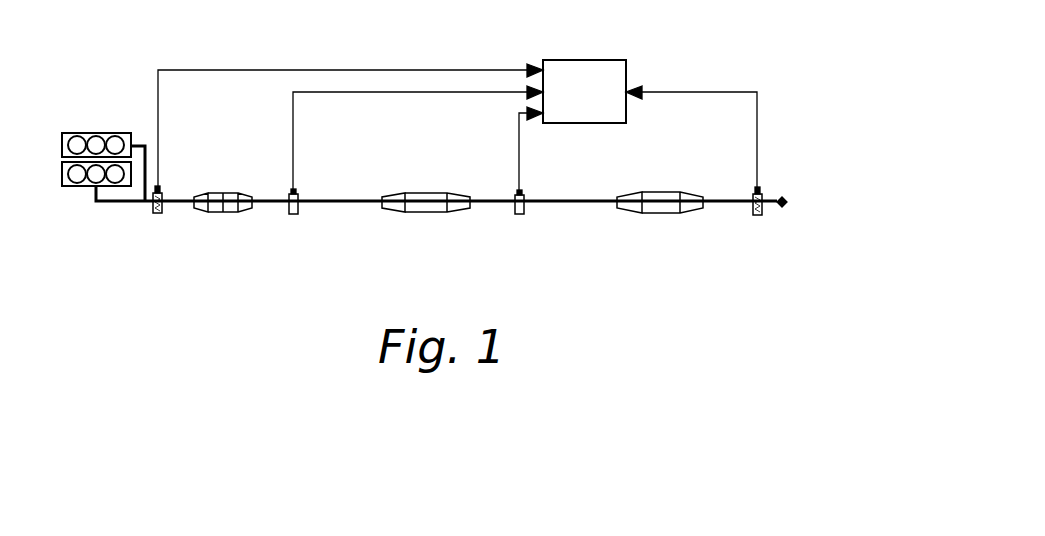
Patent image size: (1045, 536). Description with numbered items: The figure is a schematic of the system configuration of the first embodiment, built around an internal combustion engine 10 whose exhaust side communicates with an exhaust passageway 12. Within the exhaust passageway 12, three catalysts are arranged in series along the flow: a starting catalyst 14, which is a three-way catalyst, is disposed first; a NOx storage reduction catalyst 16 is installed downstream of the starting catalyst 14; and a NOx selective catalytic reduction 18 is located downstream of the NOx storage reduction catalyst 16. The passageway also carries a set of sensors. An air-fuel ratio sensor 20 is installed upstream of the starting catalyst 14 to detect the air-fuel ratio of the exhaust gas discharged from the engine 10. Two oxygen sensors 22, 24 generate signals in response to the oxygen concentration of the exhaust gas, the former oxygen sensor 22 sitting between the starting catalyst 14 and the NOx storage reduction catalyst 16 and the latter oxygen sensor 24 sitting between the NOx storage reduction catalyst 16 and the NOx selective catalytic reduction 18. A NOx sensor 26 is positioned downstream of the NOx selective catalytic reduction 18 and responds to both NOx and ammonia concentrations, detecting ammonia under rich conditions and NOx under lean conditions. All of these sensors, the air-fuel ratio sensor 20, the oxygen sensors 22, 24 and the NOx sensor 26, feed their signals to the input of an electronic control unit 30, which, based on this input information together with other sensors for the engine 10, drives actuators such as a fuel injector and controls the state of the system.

The internal combustion engine 10 is at (104, 126).
The exhaust passageway 12 is at (110, 207).
The starting catalyst 14 is at (228, 195).
The NOx storage reduction catalyst 16 is at (427, 197).
The NOx selective catalytic reduction 18 is at (655, 197).
The air-fuel ratio sensor 20 is at (163, 197).
The oxygen sensor 22 is at (300, 209).
The oxygen sensor 24 is at (527, 209).
The NOx sensor 26 is at (752, 213).
The electronic control unit 30 is at (607, 60).